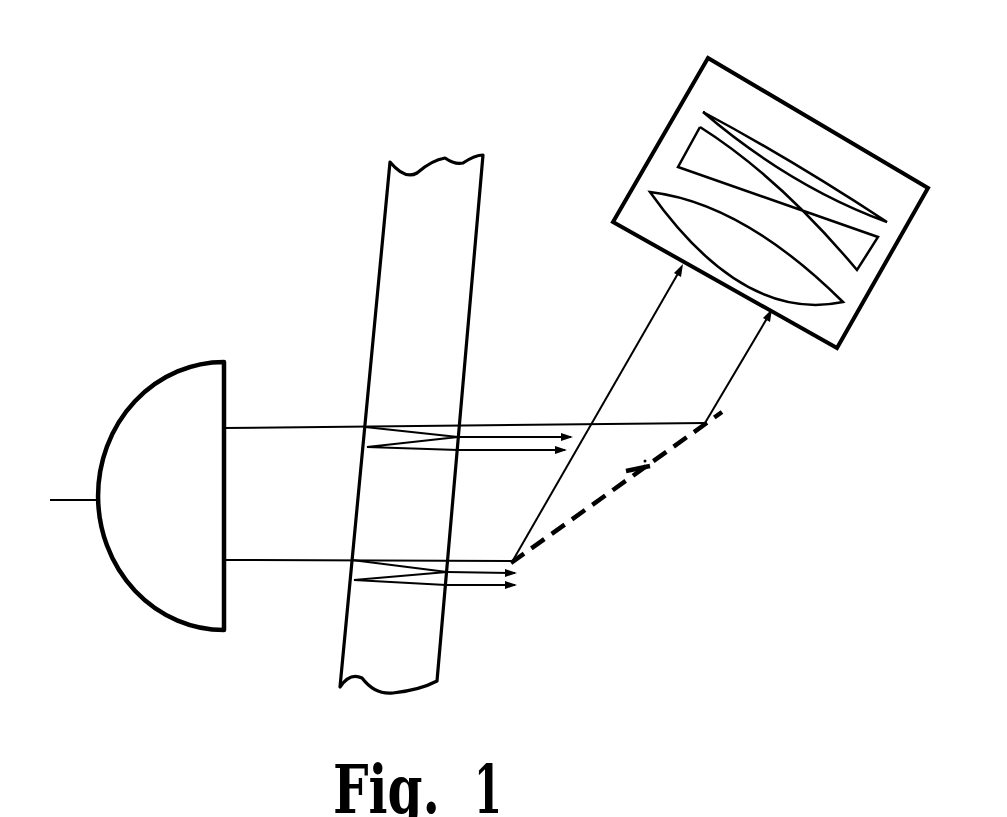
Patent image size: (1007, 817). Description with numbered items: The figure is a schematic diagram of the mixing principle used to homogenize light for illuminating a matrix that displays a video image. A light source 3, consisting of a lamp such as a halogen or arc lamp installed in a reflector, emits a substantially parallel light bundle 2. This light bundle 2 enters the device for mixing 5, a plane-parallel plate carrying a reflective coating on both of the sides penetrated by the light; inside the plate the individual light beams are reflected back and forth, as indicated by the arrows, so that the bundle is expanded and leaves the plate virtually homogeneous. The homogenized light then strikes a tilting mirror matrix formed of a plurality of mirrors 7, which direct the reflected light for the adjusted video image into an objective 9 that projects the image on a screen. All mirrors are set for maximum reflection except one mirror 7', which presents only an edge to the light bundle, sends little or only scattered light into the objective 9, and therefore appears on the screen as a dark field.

The light bundle 2 is at (293, 448).
The light source 3 is at (163, 415).
The device for mixing 5 is at (385, 647).
The mirrors 7 is at (616, 500).
The mirror 7' is at (674, 495).
The objective 9 is at (693, 147).